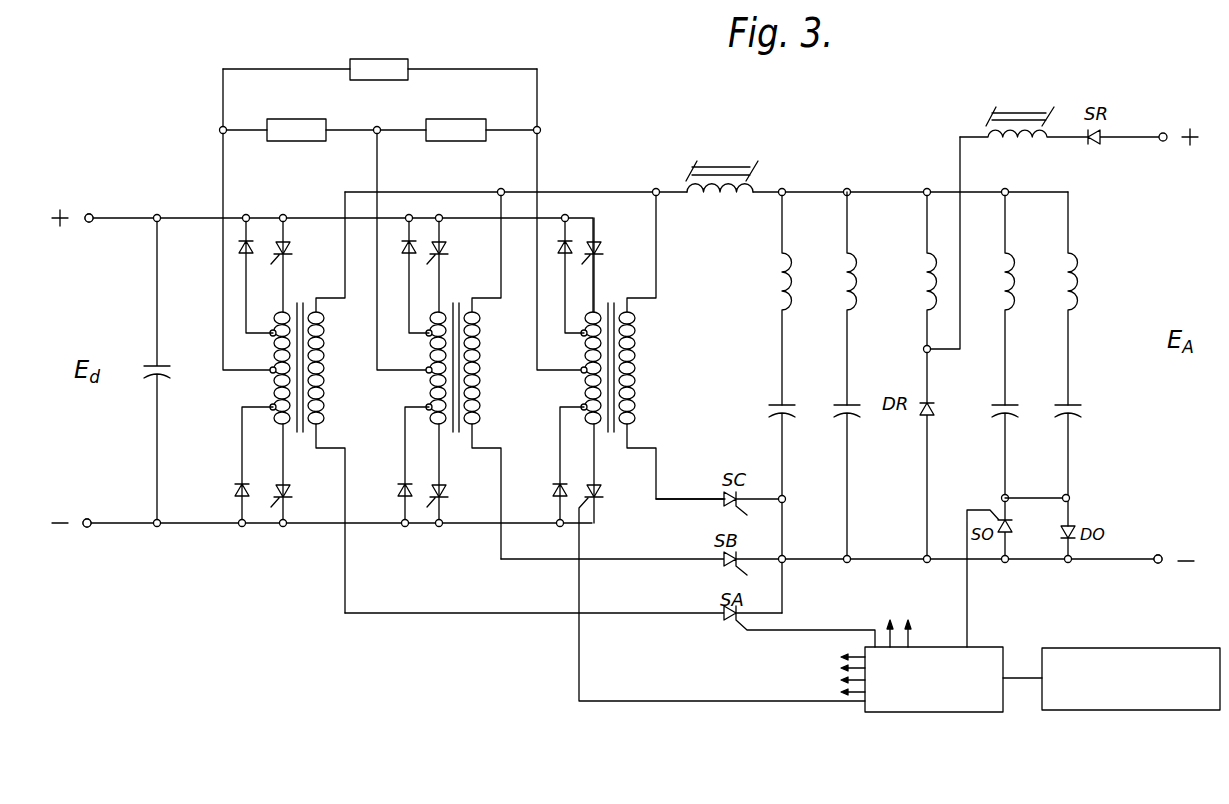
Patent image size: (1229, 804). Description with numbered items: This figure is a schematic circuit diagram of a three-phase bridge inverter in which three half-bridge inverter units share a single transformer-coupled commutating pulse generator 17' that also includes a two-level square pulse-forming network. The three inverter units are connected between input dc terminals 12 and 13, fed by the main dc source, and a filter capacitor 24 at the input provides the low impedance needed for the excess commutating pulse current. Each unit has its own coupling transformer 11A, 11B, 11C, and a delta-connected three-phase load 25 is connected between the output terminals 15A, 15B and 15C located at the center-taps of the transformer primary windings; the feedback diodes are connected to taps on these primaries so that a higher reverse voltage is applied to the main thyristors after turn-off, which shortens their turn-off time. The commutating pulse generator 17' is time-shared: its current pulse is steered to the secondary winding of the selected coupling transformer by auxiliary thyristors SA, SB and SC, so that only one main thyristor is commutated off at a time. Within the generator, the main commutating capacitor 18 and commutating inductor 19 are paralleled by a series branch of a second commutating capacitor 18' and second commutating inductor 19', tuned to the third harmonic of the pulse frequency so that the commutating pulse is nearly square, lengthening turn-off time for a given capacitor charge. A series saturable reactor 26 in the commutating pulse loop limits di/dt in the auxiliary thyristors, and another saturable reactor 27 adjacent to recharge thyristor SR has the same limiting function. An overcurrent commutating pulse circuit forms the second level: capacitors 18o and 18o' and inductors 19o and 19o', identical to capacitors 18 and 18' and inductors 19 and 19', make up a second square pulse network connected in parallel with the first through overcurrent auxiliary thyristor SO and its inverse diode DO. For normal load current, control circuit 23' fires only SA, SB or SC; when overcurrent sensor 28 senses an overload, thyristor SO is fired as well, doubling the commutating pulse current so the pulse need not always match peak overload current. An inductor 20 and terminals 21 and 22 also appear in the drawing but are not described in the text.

The coupling transformer 11A is at (278, 402).
The coupling transformer 11B is at (437, 375).
The coupling transformer 11C is at (689, 446).
The input dc terminal 12 is at (94, 213).
The input dc terminal 13 is at (90, 529).
The output terminal 15A is at (275, 375).
The output terminal 15B is at (408, 368).
The output terminal 15C is at (564, 368).
The commutating pulse generator 17' is at (831, 162).
The main commutating capacitor 18 is at (763, 509).
The second commutating capacitor 18' is at (829, 482).
The capacitor 18o is at (984, 462).
The capacitor 18o' is at (1101, 465).
The commutating inductor 19 is at (761, 297).
The second commutating inductor 19' is at (827, 298).
The inductor 19o is at (1028, 297).
The inductor 19o' is at (1109, 298).
The reactor 20 is at (915, 282).
The positive output terminal 21 is at (1163, 132).
The negative output terminal 22 is at (1161, 567).
The control circuit 23' is at (922, 651).
The filter capacitor 24 is at (142, 366).
The three-phase load 25 is at (321, 105).
The saturable reactor 26 is at (712, 206).
The saturable reactor 27 is at (1005, 150).
The overcurrent sensor 28 is at (1097, 648).